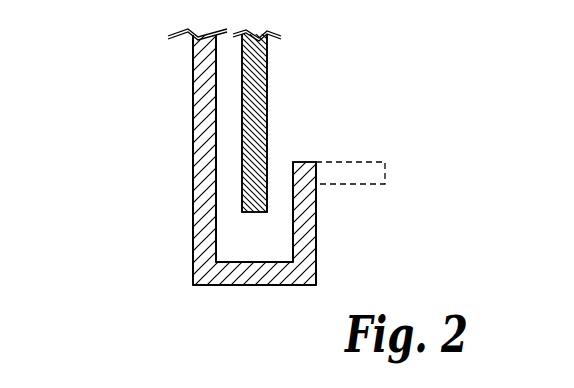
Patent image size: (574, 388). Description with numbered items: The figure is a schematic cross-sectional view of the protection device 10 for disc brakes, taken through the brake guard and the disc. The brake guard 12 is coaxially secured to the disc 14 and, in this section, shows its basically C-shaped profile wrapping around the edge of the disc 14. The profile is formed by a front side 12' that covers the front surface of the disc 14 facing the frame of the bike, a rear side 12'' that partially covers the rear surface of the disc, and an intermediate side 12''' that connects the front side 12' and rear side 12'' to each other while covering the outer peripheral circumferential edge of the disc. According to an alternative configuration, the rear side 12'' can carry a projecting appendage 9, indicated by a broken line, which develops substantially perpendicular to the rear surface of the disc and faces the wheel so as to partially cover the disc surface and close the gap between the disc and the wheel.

The protection device 10 is at (229, 193).
The brake guard 12 is at (202, 157).
The front side 12' is at (155, 160).
The rear side 12'' is at (352, 223).
The intermediate side 12''' is at (254, 310).
The disc 14 is at (267, 93).
The projecting appendage 9 is at (372, 172).